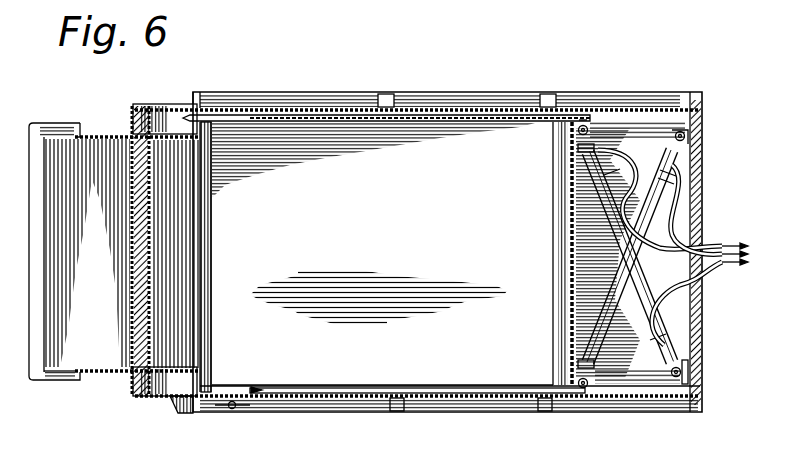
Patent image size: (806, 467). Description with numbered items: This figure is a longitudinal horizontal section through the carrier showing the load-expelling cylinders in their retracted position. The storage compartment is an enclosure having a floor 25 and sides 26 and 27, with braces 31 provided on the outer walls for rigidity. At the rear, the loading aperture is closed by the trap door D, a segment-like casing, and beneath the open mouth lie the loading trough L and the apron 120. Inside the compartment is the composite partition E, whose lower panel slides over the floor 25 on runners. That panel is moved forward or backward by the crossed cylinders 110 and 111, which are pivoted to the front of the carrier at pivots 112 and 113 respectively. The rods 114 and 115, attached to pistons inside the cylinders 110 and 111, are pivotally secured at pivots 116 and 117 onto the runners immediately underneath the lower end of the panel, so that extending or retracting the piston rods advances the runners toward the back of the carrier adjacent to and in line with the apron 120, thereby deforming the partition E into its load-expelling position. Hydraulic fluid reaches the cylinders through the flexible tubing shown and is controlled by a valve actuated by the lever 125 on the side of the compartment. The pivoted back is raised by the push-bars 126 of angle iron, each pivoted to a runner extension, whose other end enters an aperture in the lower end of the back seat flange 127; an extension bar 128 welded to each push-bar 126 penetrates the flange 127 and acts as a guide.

The floor 25 is at (382, 254).
The side 26 is at (452, 410).
The side 27 is at (440, 112).
The braces 31 is at (394, 92).
The cylinder 110 is at (670, 312).
The cylinder 111 is at (690, 180).
The pivot 112 is at (681, 372).
The pivot 113 is at (685, 136).
The rod 114 is at (578, 148).
The rod 115 is at (578, 364).
The pivot 116 is at (583, 125).
The pivot 117 is at (583, 390).
The apron 120 is at (204, 332).
The lever 125 is at (230, 412).
The push-bars 126 is at (428, 122).
The back seat flange 127 is at (188, 124).
The extension bar 128 is at (246, 388).
The trap door D is at (126, 302).
The partition E is at (548, 222).
The loading trough L is at (100, 350).